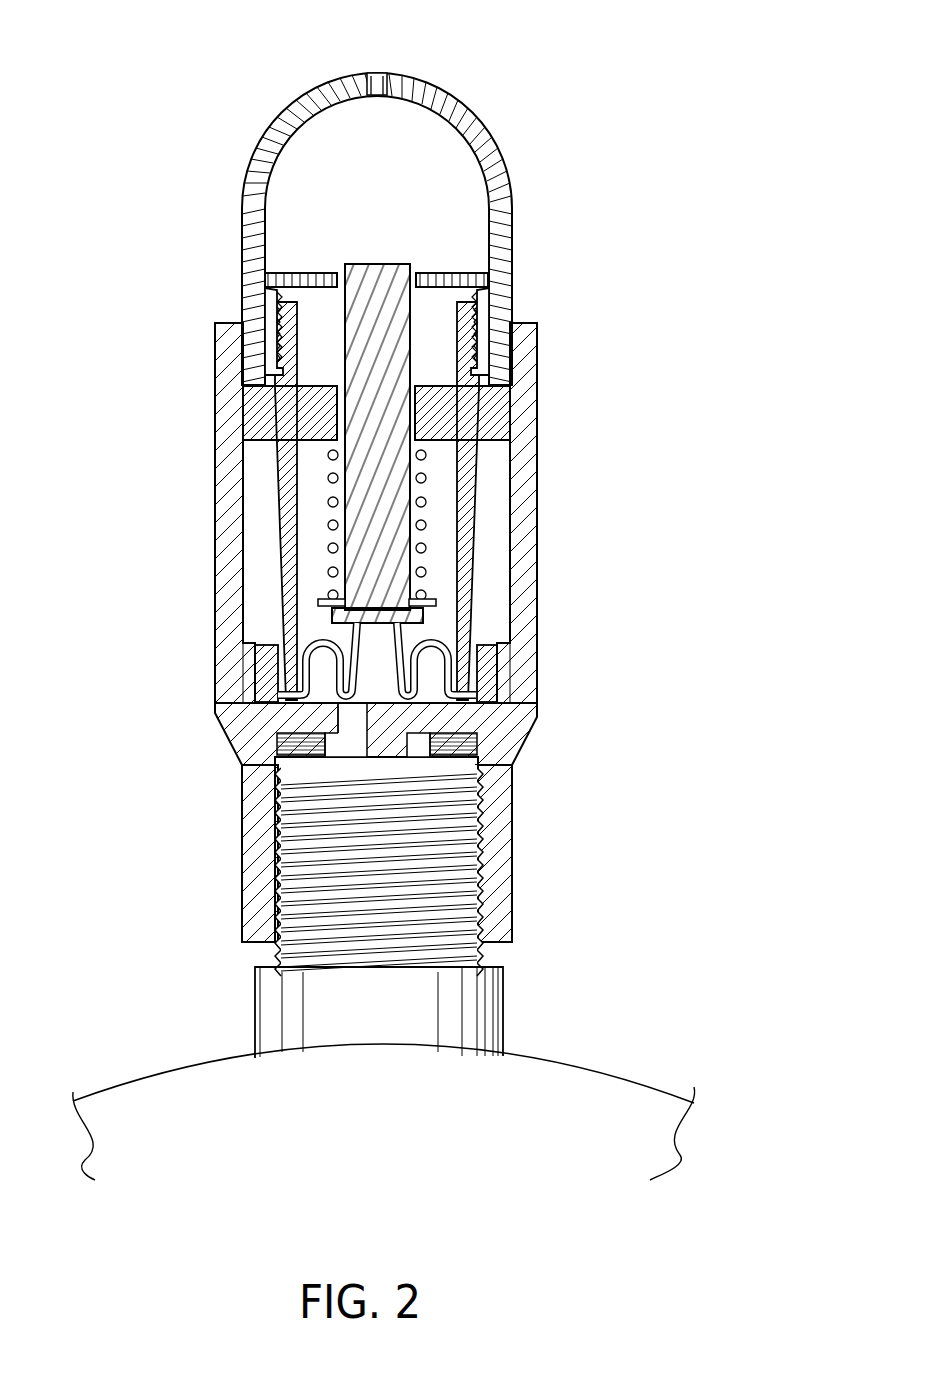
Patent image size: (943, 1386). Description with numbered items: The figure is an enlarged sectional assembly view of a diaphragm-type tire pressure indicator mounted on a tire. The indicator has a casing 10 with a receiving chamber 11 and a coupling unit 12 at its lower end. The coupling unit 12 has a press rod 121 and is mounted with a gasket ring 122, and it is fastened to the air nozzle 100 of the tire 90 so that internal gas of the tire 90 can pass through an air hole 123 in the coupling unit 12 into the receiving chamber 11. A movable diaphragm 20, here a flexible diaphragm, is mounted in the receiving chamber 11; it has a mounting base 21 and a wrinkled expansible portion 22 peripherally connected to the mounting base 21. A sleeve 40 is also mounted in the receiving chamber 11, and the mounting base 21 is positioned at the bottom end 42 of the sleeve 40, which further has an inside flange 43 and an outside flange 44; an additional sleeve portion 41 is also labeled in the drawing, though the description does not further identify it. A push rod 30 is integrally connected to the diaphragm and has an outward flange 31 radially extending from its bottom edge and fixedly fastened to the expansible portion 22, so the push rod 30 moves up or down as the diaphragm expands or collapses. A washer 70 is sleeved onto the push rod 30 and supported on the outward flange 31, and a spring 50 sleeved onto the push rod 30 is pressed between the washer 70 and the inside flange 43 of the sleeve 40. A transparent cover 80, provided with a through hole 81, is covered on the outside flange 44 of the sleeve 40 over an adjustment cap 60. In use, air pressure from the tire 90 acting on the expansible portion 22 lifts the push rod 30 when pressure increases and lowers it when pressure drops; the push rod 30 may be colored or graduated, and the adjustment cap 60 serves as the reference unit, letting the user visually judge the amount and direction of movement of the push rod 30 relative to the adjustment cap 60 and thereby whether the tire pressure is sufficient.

The casing 10 is at (438, 649).
The receiving chamber 11 is at (500, 530).
The coupling unit 12 is at (480, 822).
The movable diaphragm 20 is at (445, 699).
The mounting base 21 is at (490, 682).
The wrinkled expansible portion 22 is at (425, 663).
The push rod 30 is at (455, 345).
The outward flange 31 is at (430, 612).
The sleeve 40 is at (515, 473).
The toothed rack 41 is at (270, 355).
The bottom end 42 is at (285, 555).
The inside flange 43 is at (285, 492).
The outside flange 44 is at (250, 456).
The spring 50 is at (328, 573).
The adjustment cap 60 is at (458, 272).
The washer 70 is at (316, 606).
The cover 80 is at (473, 121).
The through hole 81 is at (377, 85).
The tire 90 is at (583, 1097).
The air nozzle 100 is at (475, 960).
The press rod 121 is at (378, 752).
The gasket ring 122 is at (477, 752).
The air hole 123 is at (350, 714).